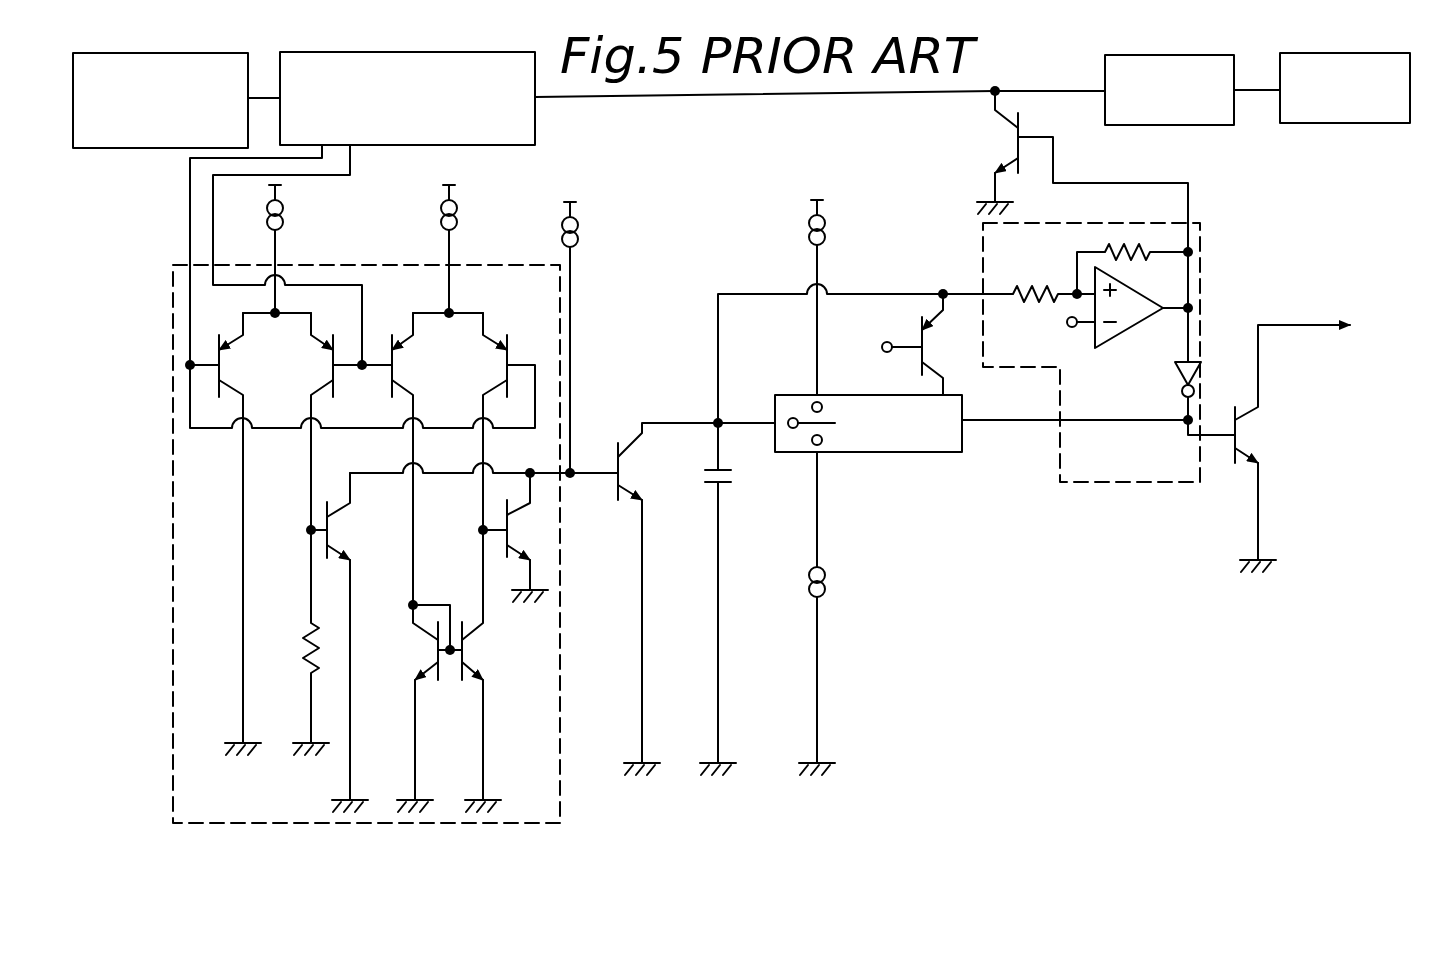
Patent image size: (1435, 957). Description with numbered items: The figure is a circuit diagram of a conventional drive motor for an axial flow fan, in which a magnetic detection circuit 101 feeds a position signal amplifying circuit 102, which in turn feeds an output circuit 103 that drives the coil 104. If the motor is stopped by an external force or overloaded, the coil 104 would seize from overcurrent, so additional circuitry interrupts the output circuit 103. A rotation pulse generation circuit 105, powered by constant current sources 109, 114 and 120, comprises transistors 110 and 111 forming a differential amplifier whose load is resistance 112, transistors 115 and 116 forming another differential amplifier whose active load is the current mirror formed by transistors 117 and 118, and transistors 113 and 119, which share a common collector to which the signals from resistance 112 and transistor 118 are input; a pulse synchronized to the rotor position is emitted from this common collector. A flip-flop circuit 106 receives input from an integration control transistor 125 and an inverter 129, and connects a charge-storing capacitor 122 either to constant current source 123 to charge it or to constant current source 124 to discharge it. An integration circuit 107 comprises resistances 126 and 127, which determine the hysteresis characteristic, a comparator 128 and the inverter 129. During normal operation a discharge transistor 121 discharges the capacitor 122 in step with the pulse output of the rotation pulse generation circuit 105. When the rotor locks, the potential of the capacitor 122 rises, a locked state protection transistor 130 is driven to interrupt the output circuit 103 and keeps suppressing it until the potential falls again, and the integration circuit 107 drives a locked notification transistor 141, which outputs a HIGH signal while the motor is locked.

The magnetic detection circuit 101 is at (167, 53).
The position signal amplifying circuit 102 is at (437, 52).
The output circuit 103 is at (1177, 55).
The coil 104 is at (1358, 53).
The rotation pulse generation circuit 105 is at (340, 260).
The flip-flop circuit 106 is at (878, 452).
The integration circuit 107 is at (1115, 483).
The constant current source 109 is at (290, 208).
The transistor 110 is at (227, 377).
The transistor 111 is at (315, 358).
The resistance 112 is at (303, 640).
The transistor 113 is at (338, 530).
The constant current source 114 is at (465, 207).
The transistor 115 is at (400, 377).
The transistor 116 is at (487, 358).
The transistor 117 is at (423, 653).
The transistor 118 is at (470, 655).
The transistor 119 is at (522, 508).
The constant current source 120 is at (580, 232).
The discharge transistor 121 is at (632, 463).
The charge-storing capacitor 122 is at (730, 492).
The constant current source 123 is at (827, 232).
The constant current source 124 is at (833, 580).
The integration control transistor 125 is at (932, 345).
The resistance 126 is at (1040, 282).
The resistance 127 is at (1137, 262).
The comparator 128 is at (1137, 328).
The inverter 129 is at (1177, 370).
The locked state protection transistor 130 is at (1010, 138).
The locked notification transistor 141 is at (1252, 447).